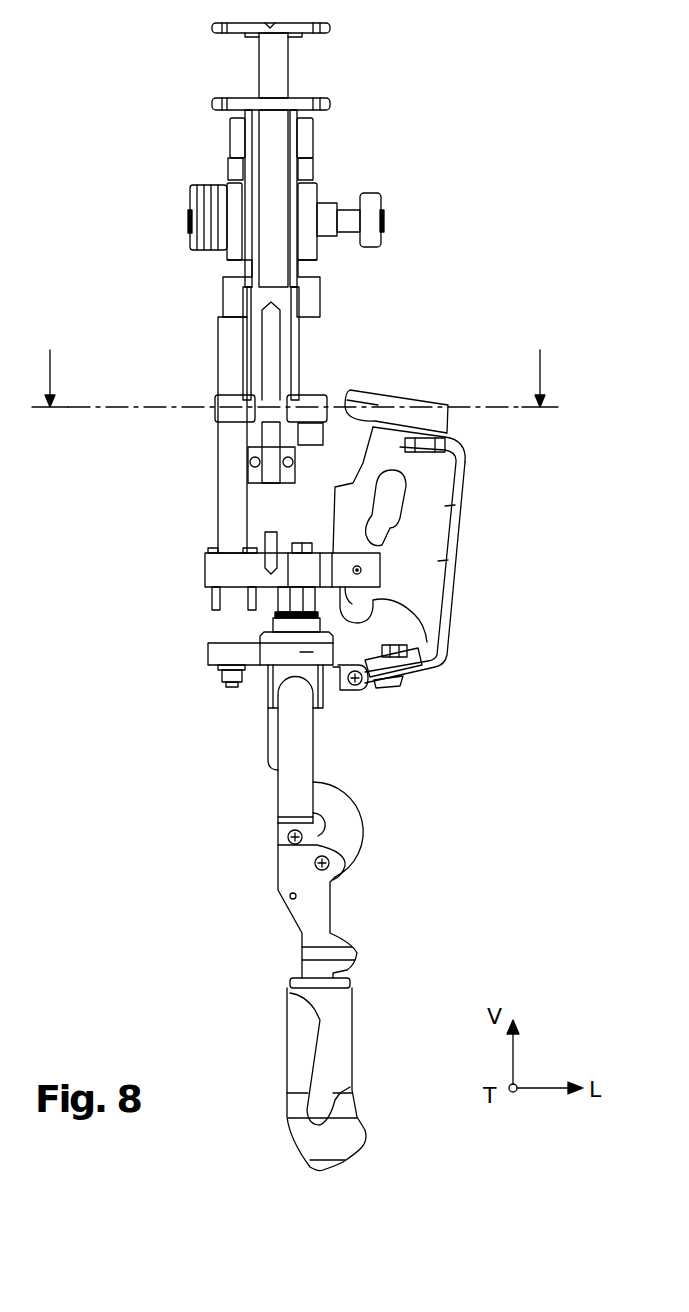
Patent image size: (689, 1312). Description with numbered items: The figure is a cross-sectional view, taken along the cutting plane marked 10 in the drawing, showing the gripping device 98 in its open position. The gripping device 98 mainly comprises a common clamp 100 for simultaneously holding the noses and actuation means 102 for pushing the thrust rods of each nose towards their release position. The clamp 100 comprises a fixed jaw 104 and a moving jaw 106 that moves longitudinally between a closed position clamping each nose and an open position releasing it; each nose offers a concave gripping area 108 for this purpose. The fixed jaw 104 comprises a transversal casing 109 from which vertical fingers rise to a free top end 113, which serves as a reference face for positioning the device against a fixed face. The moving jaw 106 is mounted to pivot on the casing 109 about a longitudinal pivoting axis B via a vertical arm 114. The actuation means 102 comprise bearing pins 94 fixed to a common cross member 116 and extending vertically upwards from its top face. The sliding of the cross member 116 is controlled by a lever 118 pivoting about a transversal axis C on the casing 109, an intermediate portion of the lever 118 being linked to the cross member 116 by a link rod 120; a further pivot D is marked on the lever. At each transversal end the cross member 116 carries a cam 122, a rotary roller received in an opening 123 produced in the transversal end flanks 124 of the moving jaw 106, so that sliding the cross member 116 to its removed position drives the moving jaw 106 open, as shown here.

The section line 10 is at (309, 378).
The bearing pin 94 is at (273, 535).
The gripping device 98 is at (158, 811).
The common clamp 100 is at (362, 358).
The actuation means 102 is at (192, 553).
The fixed jaw 104 is at (235, 348).
The moving jaw 106 is at (440, 420).
The gripping area 108 is at (228, 405).
The transversal casing 109 is at (257, 657).
The free top end 113 is at (235, 300).
The vertical arm 114 is at (440, 610).
The cross member 116 is at (245, 568).
The lever 118 is at (328, 938).
The link rod 120 is at (340, 817).
The cam 122 is at (412, 628).
The opening 123 is at (392, 508).
The transversal end flank 124 is at (415, 592).
The longitudinal pivoting axis B is at (360, 688).
The transversal axis C is at (290, 845).
The pivot D is at (333, 850).